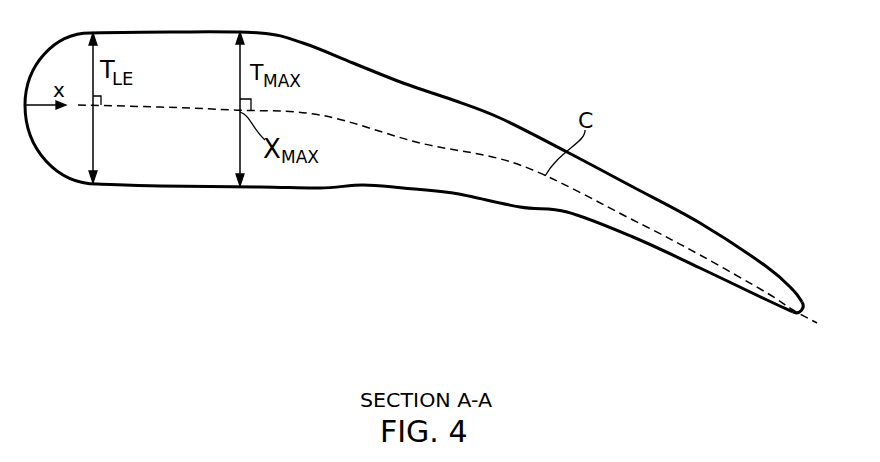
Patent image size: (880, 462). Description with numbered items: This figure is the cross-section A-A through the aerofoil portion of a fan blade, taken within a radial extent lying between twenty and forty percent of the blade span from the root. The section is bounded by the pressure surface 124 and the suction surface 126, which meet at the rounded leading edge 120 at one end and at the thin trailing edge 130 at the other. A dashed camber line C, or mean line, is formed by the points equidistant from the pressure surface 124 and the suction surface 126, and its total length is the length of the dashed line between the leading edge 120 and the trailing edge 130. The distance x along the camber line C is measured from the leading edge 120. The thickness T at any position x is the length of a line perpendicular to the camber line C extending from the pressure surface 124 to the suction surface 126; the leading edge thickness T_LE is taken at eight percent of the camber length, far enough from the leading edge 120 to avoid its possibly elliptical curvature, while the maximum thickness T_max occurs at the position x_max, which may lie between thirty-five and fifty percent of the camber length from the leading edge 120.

The leading edge 120 is at (25, 105).
The pressure surface 124 is at (410, 190).
The suction surface 126 is at (455, 98).
The trailing edge 130 is at (803, 310).